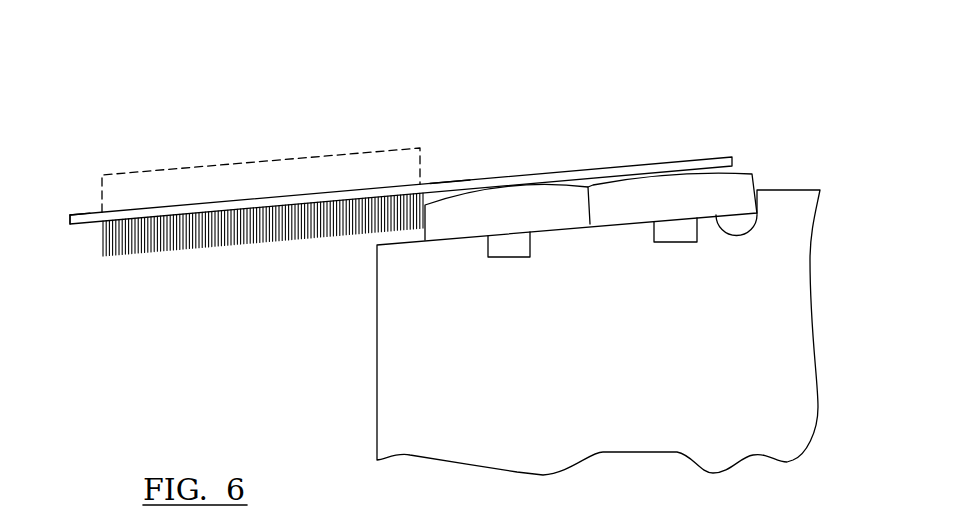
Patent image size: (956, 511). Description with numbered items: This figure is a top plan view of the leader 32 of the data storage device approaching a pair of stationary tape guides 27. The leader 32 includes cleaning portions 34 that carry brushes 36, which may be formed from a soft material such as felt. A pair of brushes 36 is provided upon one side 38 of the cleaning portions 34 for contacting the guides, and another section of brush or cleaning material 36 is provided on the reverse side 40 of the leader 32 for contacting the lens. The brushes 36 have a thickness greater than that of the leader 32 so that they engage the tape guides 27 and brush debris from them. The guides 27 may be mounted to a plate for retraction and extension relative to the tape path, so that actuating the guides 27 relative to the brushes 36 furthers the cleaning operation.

The stationary tape guides 27 is at (560, 200).
The leader 32 is at (450, 181).
The cleaning portions 34 is at (292, 193).
The brushes 36 is at (192, 166).
The one side 38 is at (73, 225).
The reverse side 40 is at (73, 214).